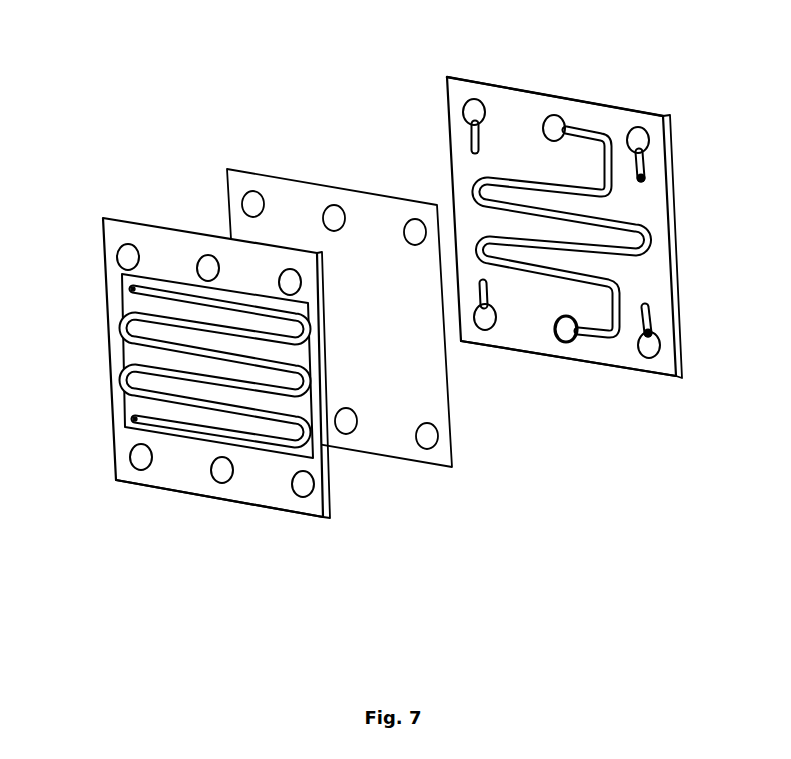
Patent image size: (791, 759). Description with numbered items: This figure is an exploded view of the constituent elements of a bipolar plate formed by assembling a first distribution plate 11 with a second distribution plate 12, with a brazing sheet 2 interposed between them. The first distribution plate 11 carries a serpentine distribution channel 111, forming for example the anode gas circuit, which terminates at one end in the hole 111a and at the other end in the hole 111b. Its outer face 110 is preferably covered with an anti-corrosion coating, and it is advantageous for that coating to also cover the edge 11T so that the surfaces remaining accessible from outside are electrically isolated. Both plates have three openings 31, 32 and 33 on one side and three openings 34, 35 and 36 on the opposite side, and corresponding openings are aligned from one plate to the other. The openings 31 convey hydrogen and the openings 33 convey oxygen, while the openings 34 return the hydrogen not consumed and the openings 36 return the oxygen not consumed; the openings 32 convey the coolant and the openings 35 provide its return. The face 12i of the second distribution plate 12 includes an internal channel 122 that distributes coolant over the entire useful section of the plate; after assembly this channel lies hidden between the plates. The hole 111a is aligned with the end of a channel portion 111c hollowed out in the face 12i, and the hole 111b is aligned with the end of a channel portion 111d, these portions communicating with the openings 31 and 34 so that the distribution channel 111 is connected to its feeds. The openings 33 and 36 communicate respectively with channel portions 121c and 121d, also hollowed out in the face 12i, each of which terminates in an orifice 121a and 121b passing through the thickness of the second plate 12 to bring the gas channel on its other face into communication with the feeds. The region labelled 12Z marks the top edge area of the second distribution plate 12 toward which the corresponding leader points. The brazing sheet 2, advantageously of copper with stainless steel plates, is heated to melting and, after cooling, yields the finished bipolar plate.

The brazing sheet 2 is at (382, 432).
The first distribution plate 11 is at (116, 304).
The outer face of the peripheral section 110 is at (265, 505).
The edge of the distribution plate 11T is at (314, 525).
The distribution channel 111 is at (130, 330).
The hole 111a is at (128, 288).
The hole 111b is at (133, 420).
The second distribution plate 12 is at (527, 338).
The top edge of second separator 12Z is at (600, 124).
The face of the second distribution plate 12i is at (622, 358).
The internal channel 122 is at (645, 236).
The channel portion 111c is at (472, 145).
The channel portion 121c is at (642, 170).
The orifice 121a is at (641, 187).
The channel portion 111d is at (488, 293).
The orifice 121b is at (645, 308).
The channel portion 121d is at (650, 323).
The opening 31 is at (118, 256).
The opening 32 is at (208, 263).
The opening 33 is at (291, 279).
The opening 34 is at (140, 470).
The opening 35 is at (221, 482).
The opening 36 is at (310, 487).